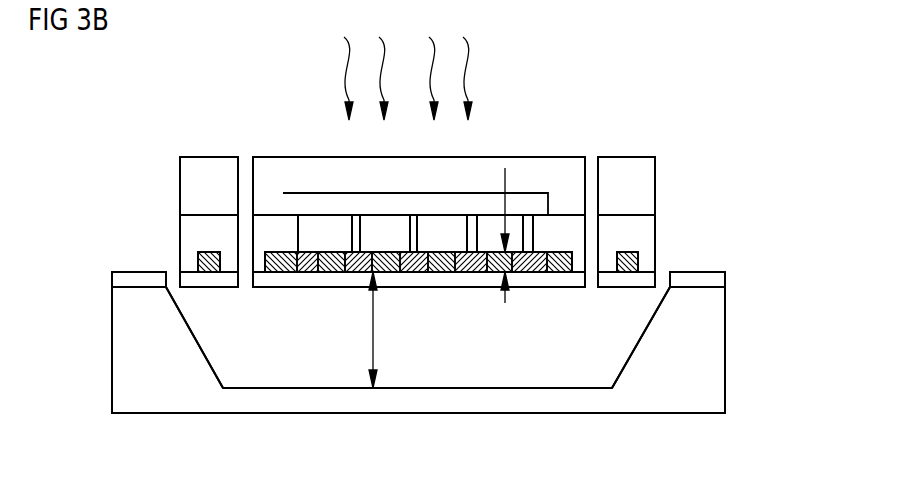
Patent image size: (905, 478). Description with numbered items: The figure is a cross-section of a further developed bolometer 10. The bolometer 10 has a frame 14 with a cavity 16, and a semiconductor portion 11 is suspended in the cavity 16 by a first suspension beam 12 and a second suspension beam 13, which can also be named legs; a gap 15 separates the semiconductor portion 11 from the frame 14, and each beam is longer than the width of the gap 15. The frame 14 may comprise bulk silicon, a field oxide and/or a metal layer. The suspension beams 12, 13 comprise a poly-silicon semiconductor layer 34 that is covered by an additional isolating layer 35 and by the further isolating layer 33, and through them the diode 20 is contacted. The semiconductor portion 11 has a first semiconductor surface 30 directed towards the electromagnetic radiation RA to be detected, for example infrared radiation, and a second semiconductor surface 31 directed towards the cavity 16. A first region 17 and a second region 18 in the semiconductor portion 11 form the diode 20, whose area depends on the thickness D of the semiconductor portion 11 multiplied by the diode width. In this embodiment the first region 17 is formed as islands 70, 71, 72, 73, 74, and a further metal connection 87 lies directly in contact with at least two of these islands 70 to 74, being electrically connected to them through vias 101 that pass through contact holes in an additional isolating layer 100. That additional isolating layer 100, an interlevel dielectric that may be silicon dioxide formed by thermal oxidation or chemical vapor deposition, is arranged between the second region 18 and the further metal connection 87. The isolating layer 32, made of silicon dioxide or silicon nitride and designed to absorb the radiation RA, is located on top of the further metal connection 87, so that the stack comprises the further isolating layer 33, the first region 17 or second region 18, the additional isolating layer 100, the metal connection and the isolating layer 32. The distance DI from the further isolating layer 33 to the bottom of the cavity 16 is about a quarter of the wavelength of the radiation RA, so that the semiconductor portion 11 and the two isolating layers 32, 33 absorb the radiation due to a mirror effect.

The bolometer 10 is at (141, 124).
The semiconductor portion 11 is at (264, 288).
The first suspension beam 12 is at (211, 135).
The second suspension beam 13 is at (624, 135).
The frame 14 is at (120, 347).
The gap 15 is at (173, 283).
The cavity 16 is at (538, 372).
The first region 17 is at (283, 272).
The second region 18 is at (333, 272).
The diode 20 is at (302, 242).
The first semiconductor surface 30 is at (320, 244).
The second semiconductor surface 31 is at (386, 275).
The isolating layer 32 is at (572, 157).
The further isolating layer 33 is at (120, 278).
The semiconductor layer 34 is at (200, 258).
The additional isolating layer 35 is at (202, 158).
The island 70 is at (556, 272).
The island 71 is at (472, 272).
The island 72 is at (438, 273).
The island 73 is at (358, 272).
The island 74 is at (301, 272).
The further metal connection 87 is at (419, 156).
The additional isolating layer 100 is at (208, 228).
The via 101 is at (298, 218).
The electromagnetic radiation RA is at (408, 78).
The thickness D is at (515, 170).
The distance DI is at (385, 357).